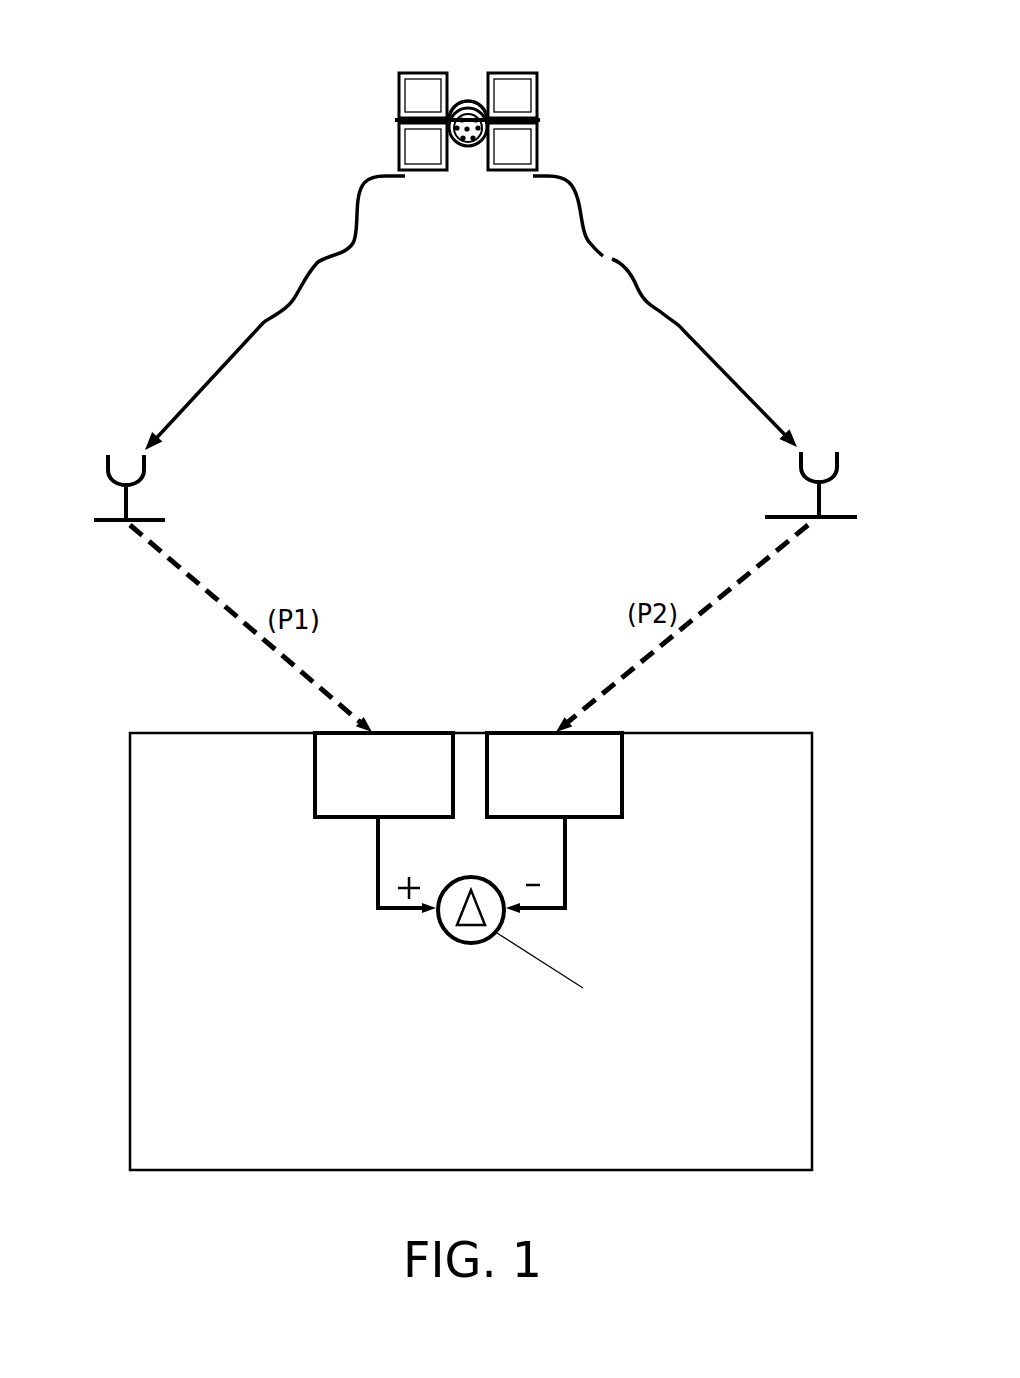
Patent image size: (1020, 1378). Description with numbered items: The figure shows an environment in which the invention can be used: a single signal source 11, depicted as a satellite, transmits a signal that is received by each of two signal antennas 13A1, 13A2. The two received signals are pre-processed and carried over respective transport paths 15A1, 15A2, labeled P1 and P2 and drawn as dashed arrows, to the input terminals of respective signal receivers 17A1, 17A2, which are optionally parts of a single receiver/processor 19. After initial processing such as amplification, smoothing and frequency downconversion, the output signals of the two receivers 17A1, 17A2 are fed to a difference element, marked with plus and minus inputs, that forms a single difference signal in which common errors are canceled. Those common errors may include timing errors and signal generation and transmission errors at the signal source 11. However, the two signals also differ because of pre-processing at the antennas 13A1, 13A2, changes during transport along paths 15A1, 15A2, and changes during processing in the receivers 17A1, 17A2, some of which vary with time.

The signal source 11 is at (472, 98).
The first signal antenna 13A1 is at (143, 480).
The second signal antenna 13A2 is at (807, 478).
The first transport path 15A1 is at (222, 605).
The second transport path 15A2 is at (738, 585).
The first signal receiver 17A1 is at (347, 772).
The second signal receiver 17A2 is at (592, 772).
The processor 19 is at (513, 951).